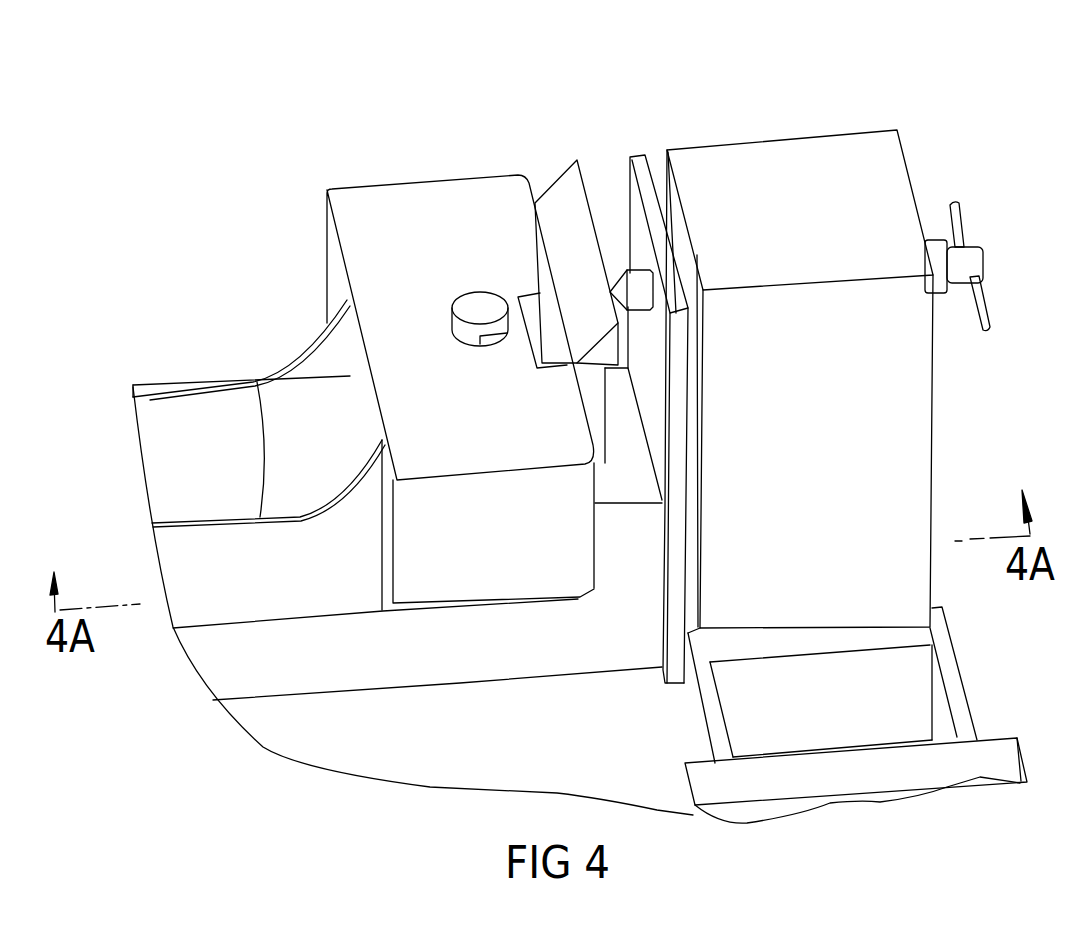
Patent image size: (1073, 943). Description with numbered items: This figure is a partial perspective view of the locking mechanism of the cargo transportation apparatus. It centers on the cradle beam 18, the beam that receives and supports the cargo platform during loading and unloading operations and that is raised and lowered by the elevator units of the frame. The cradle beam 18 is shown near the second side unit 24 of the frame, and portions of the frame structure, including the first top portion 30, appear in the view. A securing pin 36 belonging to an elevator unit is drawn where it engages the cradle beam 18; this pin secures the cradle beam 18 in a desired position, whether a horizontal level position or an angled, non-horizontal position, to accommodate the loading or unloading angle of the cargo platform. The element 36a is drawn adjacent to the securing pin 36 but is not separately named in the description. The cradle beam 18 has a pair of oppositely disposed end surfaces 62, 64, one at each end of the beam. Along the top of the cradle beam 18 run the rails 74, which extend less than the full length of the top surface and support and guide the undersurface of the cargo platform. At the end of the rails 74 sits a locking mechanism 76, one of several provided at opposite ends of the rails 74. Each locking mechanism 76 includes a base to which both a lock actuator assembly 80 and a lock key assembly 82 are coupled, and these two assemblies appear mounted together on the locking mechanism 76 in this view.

The cradle beam 18 is at (464, 686).
The second side unit 24 is at (875, 102).
The first top portion 30 is at (960, 682).
The securing pin 36 is at (977, 250).
The clamp plate 36a is at (690, 266).
The end surface 62 is at (644, 160).
The end surface 64 is at (277, 672).
The rails 74 is at (260, 400).
The locking mechanism 76 is at (353, 201).
The lock actuator assembly 80 is at (461, 294).
The lock key assembly 82 is at (560, 200).